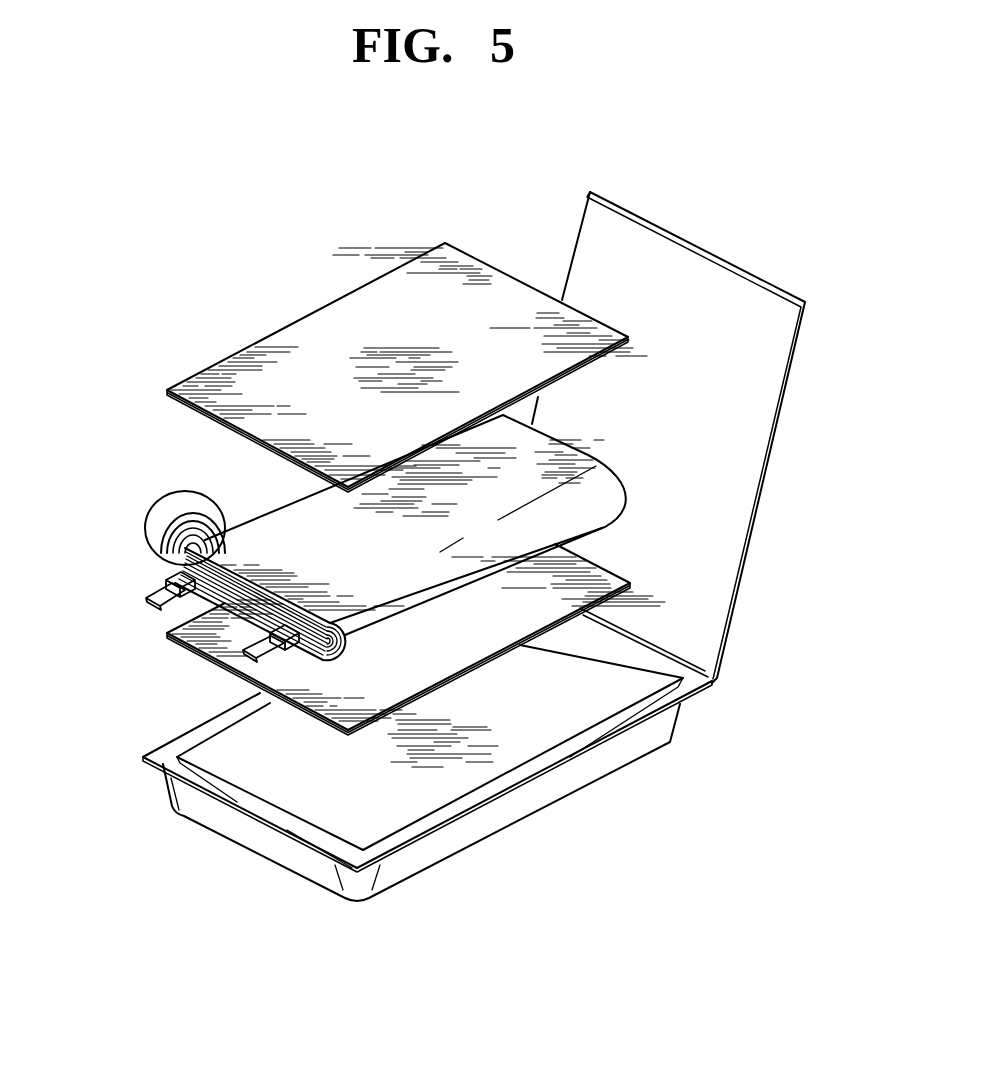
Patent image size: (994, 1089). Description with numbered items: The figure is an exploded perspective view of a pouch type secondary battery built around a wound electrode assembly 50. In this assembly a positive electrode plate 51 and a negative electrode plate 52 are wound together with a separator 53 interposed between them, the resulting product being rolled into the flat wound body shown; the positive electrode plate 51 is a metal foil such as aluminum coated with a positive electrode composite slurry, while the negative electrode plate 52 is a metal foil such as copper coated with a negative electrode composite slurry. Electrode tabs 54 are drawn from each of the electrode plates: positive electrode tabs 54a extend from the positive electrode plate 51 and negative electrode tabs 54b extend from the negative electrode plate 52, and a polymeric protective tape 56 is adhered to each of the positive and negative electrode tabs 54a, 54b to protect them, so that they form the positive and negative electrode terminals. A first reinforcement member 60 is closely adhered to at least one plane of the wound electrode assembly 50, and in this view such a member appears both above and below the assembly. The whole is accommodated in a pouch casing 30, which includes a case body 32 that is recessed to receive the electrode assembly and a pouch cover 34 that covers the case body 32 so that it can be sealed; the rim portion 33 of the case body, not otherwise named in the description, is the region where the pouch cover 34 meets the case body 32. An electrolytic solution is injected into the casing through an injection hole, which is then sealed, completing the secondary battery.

The pouch casing 30 is at (800, 625).
The case body 32 is at (677, 723).
The sealing flange 33 is at (578, 741).
The pouch cover 34 is at (730, 623).
The wound electrode assembly 50 is at (607, 493).
The positive electrode plate 51 is at (168, 535).
The negative electrode plate 52 is at (168, 557).
The separator 53 is at (162, 523).
The electrode tabs 54 is at (157, 730).
The positive electrode tabs 54a is at (165, 580).
The negative electrode tabs 54b is at (237, 660).
The polymeric protective tape 56 is at (143, 605).
The first reinforcement member 60 is at (268, 318).